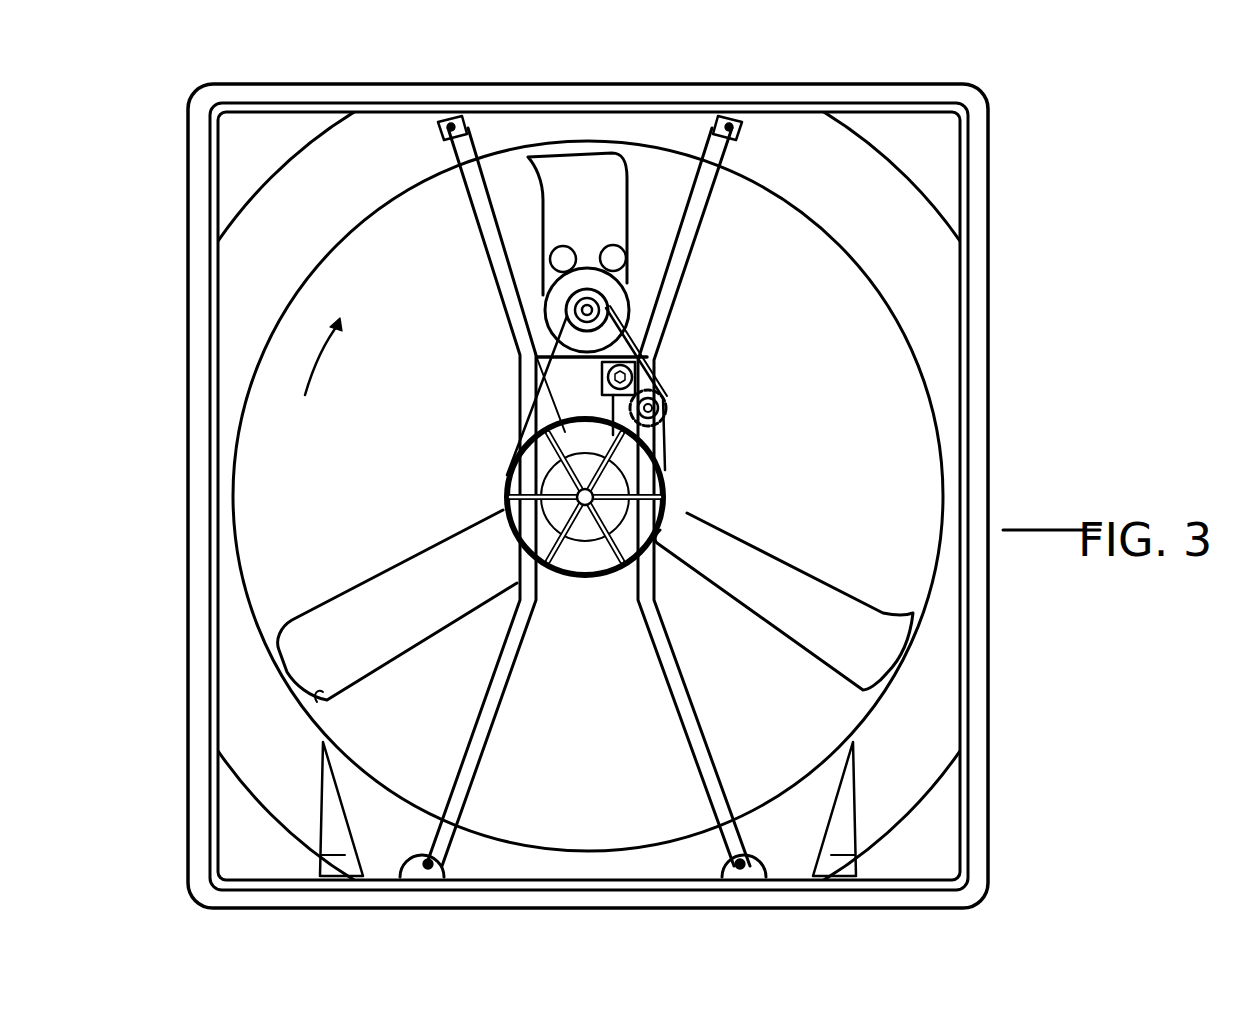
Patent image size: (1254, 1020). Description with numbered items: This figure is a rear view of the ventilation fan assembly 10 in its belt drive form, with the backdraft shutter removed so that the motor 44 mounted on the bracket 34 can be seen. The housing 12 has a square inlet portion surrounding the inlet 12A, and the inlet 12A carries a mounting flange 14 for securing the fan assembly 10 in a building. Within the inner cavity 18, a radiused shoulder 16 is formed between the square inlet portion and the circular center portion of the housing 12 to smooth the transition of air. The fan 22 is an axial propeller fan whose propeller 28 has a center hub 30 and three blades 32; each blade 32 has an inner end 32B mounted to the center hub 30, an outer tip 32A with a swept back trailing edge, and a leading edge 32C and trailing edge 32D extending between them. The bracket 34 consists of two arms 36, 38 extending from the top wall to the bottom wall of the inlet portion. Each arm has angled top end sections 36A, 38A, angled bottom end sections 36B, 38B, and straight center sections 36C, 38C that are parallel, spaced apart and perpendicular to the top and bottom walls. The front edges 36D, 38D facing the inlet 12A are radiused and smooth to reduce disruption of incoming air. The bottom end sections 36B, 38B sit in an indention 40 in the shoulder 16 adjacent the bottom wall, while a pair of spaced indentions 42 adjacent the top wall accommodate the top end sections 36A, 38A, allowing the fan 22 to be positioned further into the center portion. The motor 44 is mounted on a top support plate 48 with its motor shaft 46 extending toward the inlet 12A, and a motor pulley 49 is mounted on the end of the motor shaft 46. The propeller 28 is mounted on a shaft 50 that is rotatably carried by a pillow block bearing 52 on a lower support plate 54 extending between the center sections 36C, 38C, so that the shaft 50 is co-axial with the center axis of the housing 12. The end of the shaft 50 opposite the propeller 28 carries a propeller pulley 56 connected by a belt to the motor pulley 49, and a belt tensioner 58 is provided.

The fan assembly 10 is at (835, 78).
The housing 12 is at (975, 175).
The inlet 12A is at (968, 245).
The mounting flange 14 is at (988, 100).
The shoulder 16 is at (935, 670).
The inner cavity 18 is at (868, 384).
The fan 22 is at (790, 456).
The propeller 28 is at (418, 536).
The center hub 30 is at (672, 502).
The blades 32 is at (362, 655).
The tip 32A is at (323, 703).
The end 32B is at (552, 574).
The leading edge 32C is at (341, 596).
The trailing edge 32D is at (466, 617).
The bracket 34 is at (690, 274).
The arm 36 is at (705, 226).
The top end section 36A is at (750, 140).
The bottom end section 36B is at (746, 848).
The center section 36C is at (670, 440).
The front edge 36D is at (690, 730).
The arm 38 is at (480, 230).
The top end section 38A is at (462, 143).
The bottom end section 38B is at (424, 838).
The center section 38C is at (525, 368).
The front edge 38D is at (492, 712).
The indention 40 is at (474, 860).
The indentions 42 is at (458, 118).
The motor 44 is at (640, 262).
The motor shaft 46 is at (618, 318).
The top support plate 48 is at (640, 370).
The motor pulley 49 is at (596, 308).
The shaft 50 is at (688, 520).
The pillow block bearing 52 is at (530, 455).
The lower support plate 54 is at (660, 565).
The propeller pulley 56 is at (670, 460).
The belt tensioner 58 is at (668, 405).